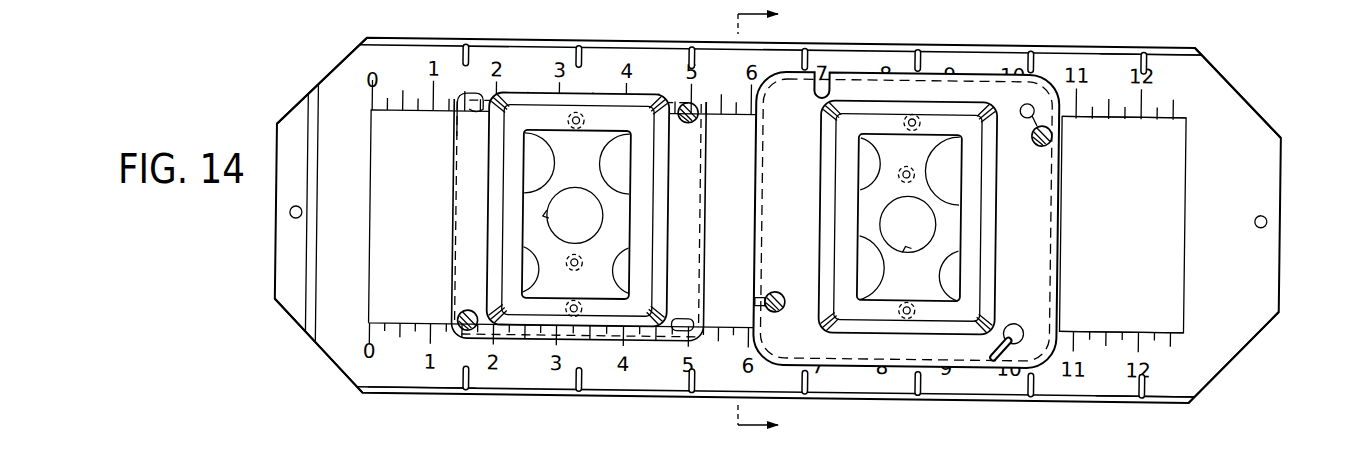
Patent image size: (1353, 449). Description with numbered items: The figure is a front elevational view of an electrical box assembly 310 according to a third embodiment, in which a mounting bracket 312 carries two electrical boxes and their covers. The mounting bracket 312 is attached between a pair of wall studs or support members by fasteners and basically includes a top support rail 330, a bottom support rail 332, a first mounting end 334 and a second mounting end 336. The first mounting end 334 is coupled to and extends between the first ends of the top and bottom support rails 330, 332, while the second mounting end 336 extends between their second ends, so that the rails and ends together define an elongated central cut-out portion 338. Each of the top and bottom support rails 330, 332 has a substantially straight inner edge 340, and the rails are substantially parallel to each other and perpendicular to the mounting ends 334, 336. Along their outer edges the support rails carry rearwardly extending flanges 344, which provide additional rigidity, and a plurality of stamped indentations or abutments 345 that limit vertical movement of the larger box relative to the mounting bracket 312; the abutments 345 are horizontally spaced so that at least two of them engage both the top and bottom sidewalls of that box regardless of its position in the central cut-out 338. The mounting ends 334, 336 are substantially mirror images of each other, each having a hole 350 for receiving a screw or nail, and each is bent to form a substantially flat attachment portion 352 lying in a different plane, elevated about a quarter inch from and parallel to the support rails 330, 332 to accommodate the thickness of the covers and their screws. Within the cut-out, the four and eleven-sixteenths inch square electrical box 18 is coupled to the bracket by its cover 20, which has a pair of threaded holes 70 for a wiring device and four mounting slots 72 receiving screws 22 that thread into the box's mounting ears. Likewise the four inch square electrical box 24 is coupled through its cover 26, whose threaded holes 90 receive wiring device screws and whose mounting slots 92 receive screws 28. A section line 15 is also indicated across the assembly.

The section line 15- 15 is at (777, 223).
The 4 11/16 inch square electrical box 18 is at (1066, 170).
The cover 20 is at (1064, 233).
The screws 22 is at (778, 288).
The 4 inch square electrical box 24 is at (457, 182).
The cover 26 is at (454, 220).
The screws 28 is at (696, 106).
The threaded holes 70 is at (914, 112).
The mounting slots 72 is at (1018, 317).
The threaded holes 90 is at (577, 127).
The mounting slots 92 is at (689, 99).
The electrical box assembly 310 is at (1024, 30).
The mounting bracket 312 is at (293, 92).
The top support rail 330 is at (384, 60).
The bottom support rail 332 is at (393, 364).
The first mounting end 334 is at (342, 93).
The second mounting end 336 is at (1211, 110).
The central cut-out portion 338 is at (1150, 254).
The inner edge 340 is at (1150, 119).
The flanges 344 is at (1165, 46).
The abutments 345 is at (578, 44).
The hole 350 is at (1261, 214).
The attachment portion 352 is at (291, 301).